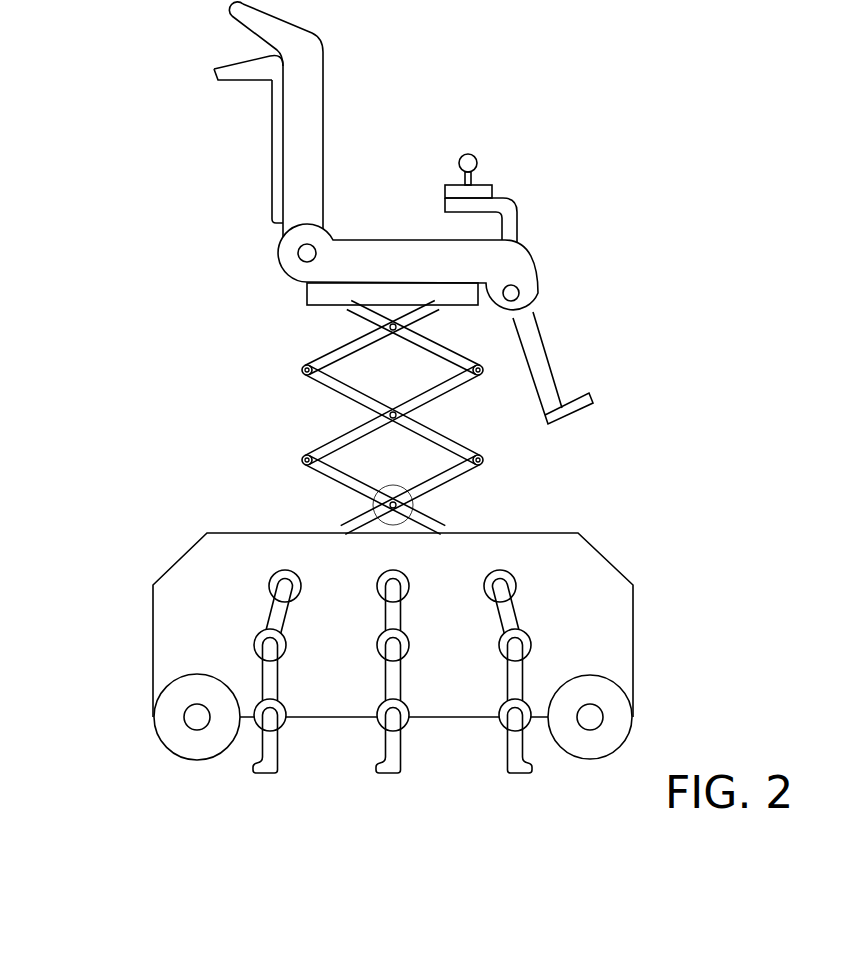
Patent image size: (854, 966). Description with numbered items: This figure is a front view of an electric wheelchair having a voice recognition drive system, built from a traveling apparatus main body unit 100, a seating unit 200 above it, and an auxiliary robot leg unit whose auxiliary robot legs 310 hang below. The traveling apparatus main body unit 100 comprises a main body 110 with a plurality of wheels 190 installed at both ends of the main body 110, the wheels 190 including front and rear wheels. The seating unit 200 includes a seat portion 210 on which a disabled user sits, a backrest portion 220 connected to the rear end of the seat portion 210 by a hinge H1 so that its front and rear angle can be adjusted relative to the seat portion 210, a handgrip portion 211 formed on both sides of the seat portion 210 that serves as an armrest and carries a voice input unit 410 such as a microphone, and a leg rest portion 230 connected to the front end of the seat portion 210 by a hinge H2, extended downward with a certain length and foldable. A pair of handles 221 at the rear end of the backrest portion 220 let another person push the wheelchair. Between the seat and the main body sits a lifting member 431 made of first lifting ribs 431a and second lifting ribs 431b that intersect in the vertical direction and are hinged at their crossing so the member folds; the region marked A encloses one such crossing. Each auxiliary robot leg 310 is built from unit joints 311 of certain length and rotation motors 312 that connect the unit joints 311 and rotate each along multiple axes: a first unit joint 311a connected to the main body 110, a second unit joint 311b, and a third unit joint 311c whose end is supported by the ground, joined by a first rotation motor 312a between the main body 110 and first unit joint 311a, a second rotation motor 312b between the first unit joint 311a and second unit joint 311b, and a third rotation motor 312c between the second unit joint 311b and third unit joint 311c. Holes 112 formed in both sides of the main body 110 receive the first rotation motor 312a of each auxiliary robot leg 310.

The traveling apparatus main body unit 100 is at (147, 640).
The main body 110 is at (167, 675).
The holes 112 is at (274, 572).
The wheels 190 is at (197, 747).
The seating unit 200 is at (340, 78).
The seat portion 210 is at (337, 272).
The handgrip portion 211 is at (508, 218).
The backrest portion 220 is at (298, 148).
The handles 221 is at (233, 66).
The leg rest portion 230 is at (537, 360).
The auxiliary robot legs 310 is at (539, 669).
The unit joints 311 is at (506, 734).
The first unit joint 311a is at (385, 604).
The second unit joint 311b is at (385, 667).
The third unit joint 311c is at (388, 733).
The rotation motors 312 is at (320, 734).
The first rotation motor 312a is at (492, 594).
The second rotation motor 312b is at (503, 650).
The third rotation motor 312c is at (528, 728).
The voice input unit 410 is at (485, 184).
The lifting member 431 is at (334, 418).
The first lifting ribs 431a is at (323, 380).
The second lifting ribs 431b is at (330, 446).
The hinge H1 is at (300, 252).
The hinge H2 is at (516, 292).
The detail region A is at (458, 500).